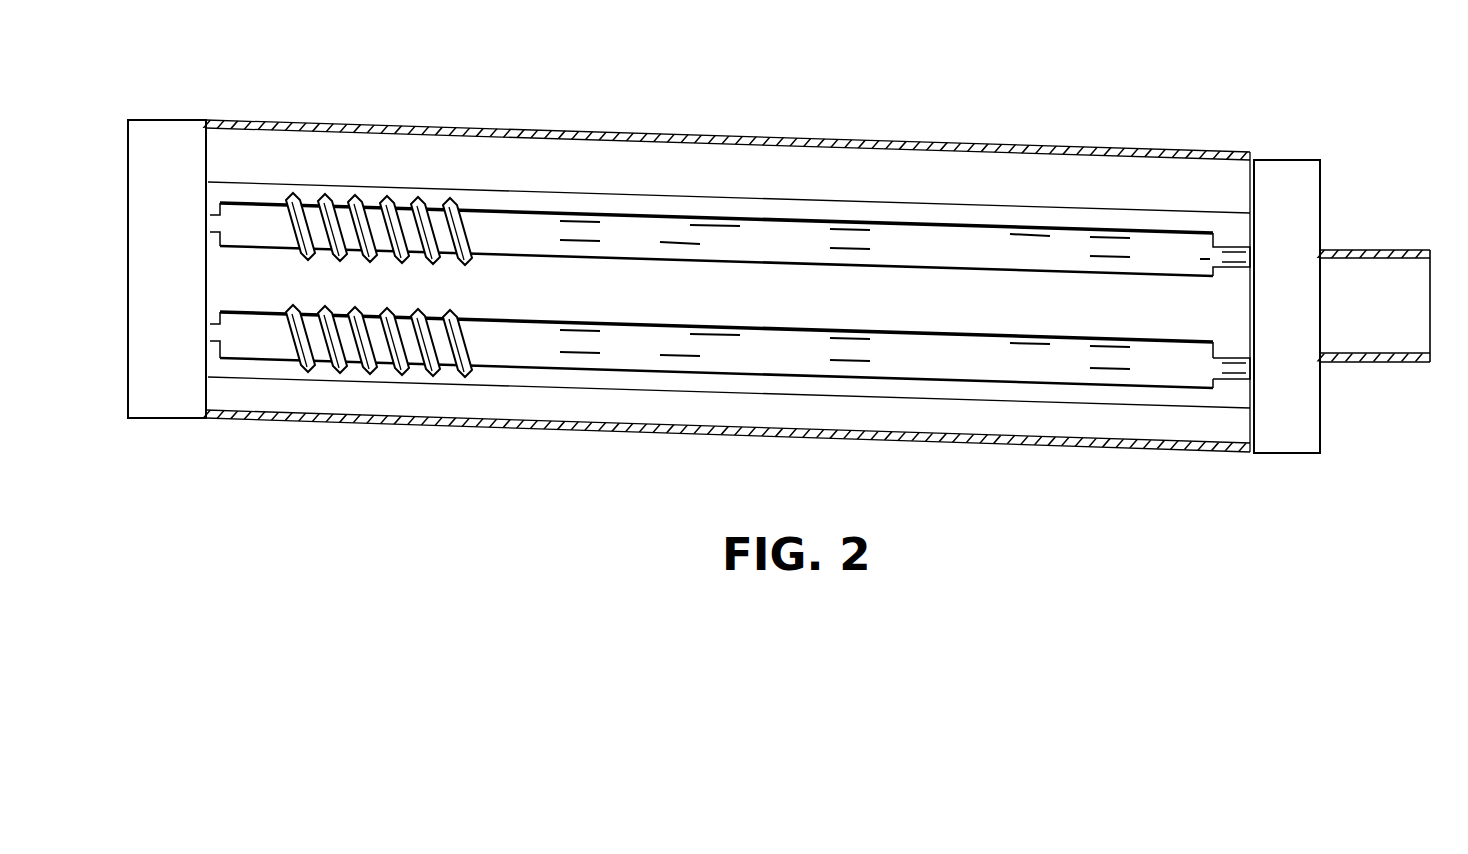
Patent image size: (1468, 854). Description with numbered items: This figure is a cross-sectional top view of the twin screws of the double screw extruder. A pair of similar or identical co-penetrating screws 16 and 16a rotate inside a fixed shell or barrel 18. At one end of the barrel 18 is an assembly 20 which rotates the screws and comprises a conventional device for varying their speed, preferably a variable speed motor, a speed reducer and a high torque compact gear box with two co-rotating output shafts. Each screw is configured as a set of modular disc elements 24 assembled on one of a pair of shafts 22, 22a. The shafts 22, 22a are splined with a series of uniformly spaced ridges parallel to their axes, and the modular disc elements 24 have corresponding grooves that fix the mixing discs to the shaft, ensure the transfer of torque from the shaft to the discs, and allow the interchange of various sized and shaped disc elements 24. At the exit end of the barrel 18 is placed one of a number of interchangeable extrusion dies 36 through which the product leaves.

The co-penetrating screw 16 is at (1217, 237).
The twin screw 16a is at (1213, 384).
The barrel 18 is at (1021, 447).
The drive assembly 20 is at (174, 137).
The shaft 22 is at (808, 240).
The shaft 22a is at (763, 348).
The modular disc element 24 is at (357, 243).
The extrusion die 36 is at (1406, 310).